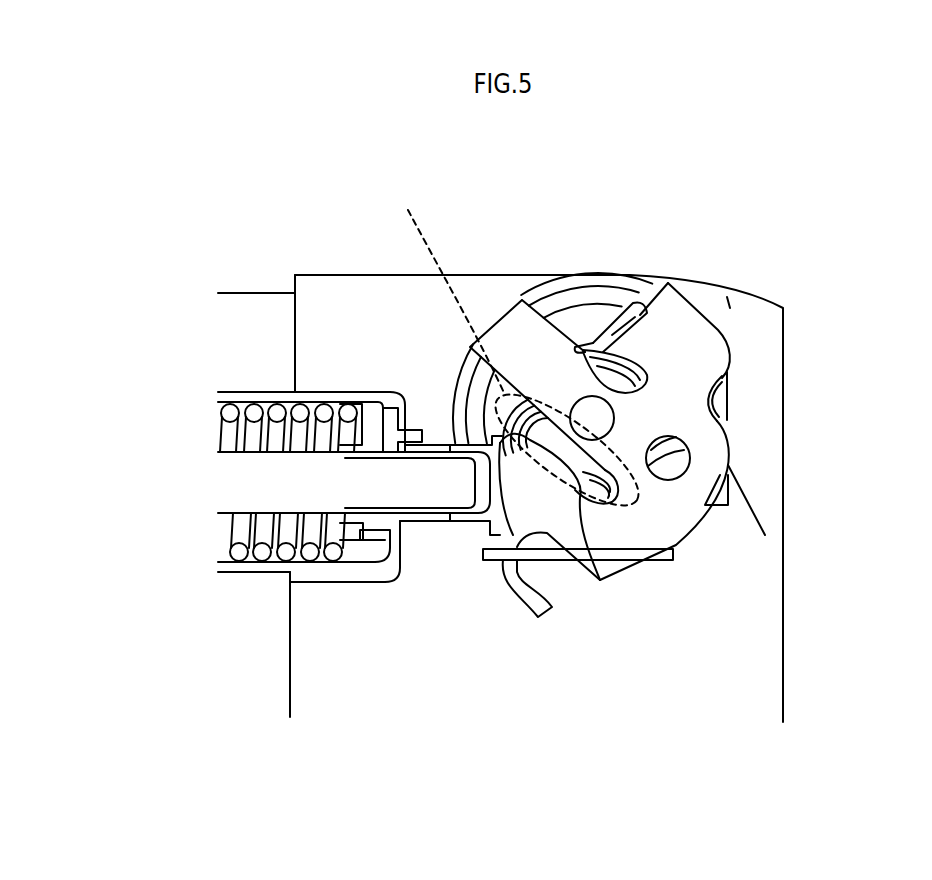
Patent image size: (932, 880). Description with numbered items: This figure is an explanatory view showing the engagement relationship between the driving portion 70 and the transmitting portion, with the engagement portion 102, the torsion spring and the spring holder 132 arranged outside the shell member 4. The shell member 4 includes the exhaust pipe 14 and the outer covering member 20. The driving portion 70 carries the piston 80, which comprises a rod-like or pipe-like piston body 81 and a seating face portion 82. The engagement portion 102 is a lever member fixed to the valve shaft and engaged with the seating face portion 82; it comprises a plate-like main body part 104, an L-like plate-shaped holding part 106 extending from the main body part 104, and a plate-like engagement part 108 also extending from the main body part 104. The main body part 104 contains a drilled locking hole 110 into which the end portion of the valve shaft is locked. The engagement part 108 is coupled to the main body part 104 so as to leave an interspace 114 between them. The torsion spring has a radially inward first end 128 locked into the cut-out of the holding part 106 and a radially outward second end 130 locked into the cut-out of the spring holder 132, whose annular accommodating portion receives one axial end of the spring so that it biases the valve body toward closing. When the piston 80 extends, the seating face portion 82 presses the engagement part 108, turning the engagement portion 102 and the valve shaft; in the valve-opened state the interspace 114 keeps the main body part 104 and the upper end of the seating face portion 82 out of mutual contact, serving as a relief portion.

The shell member 4 is at (305, 258).
The exhaust pipe 14 is at (358, 275).
The outer covering member 20 is at (255, 293).
The driving portion 70 is at (226, 372).
The piston 80 is at (308, 682).
The piston body 81 is at (427, 502).
The seating face portion 82 is at (492, 514).
The engagement portion 102 is at (525, 283).
The main body part 104 is at (653, 415).
The holding part 106 is at (680, 325).
The engagement part 108 is at (533, 487).
The locking hole 110 is at (623, 447).
The interspace 114 is at (523, 349).
The first end 128 is at (606, 298).
The second end 130 is at (512, 603).
The spring holder 132 is at (720, 395).